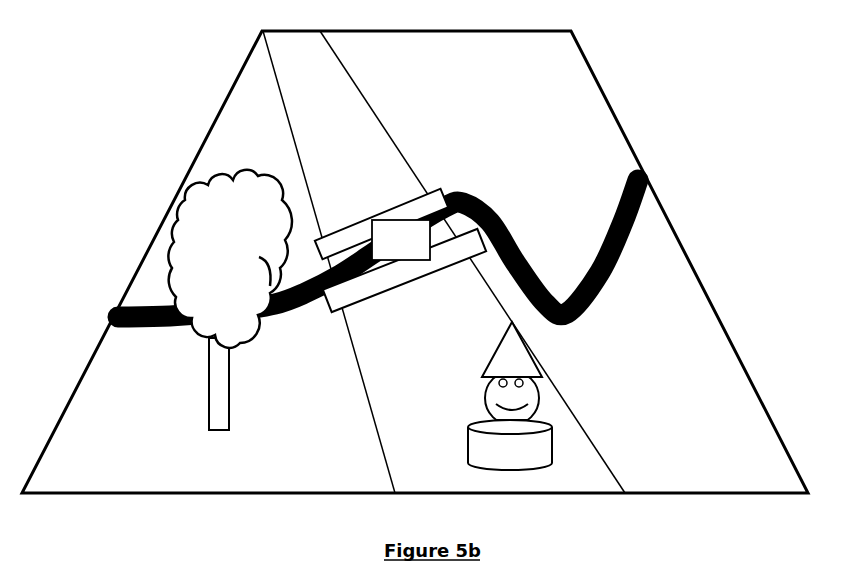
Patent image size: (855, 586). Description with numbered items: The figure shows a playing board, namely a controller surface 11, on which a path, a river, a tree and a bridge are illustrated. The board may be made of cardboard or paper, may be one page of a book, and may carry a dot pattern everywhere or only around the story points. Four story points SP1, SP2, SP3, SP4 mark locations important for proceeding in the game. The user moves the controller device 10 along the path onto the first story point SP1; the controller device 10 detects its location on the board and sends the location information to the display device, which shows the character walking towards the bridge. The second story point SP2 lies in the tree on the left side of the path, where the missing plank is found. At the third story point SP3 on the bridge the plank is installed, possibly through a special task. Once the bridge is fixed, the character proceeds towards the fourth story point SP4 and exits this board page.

The controller device 10 is at (552, 449).
The controller surface 11 is at (415, 262).
The first story point SP1 is at (492, 375).
The second story point SP2 is at (230, 300).
The third story point SP3 is at (400, 250).
The fourth story point SP4 is at (310, 86).